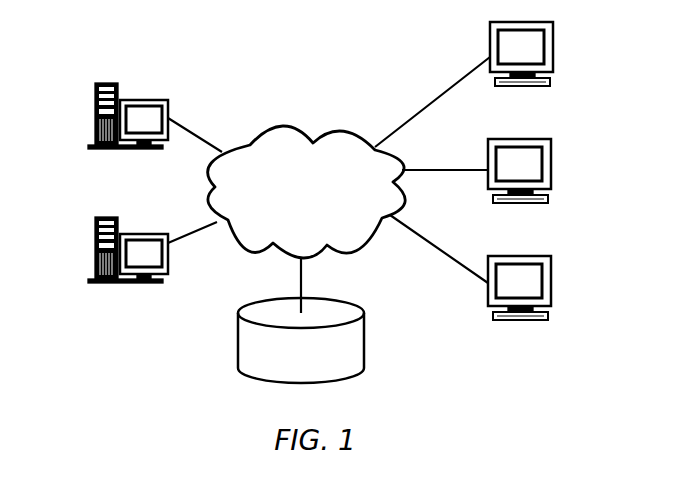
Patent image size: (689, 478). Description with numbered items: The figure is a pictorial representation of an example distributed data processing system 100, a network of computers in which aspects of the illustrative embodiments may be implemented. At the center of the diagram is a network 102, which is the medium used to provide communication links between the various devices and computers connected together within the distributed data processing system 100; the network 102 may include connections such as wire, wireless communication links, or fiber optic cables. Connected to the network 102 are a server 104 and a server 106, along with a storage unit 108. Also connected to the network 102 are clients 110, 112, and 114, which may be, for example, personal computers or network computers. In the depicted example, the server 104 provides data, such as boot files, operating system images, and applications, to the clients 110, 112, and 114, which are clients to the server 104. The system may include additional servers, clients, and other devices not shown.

The distributed data processing system 100 is at (370, 62).
The network 102 is at (287, 128).
The server 104 is at (93, 117).
The server 106 is at (95, 250).
The storage unit 108 is at (238, 338).
The client 110 is at (555, 55).
The client 112 is at (553, 170).
The client 114 is at (553, 290).